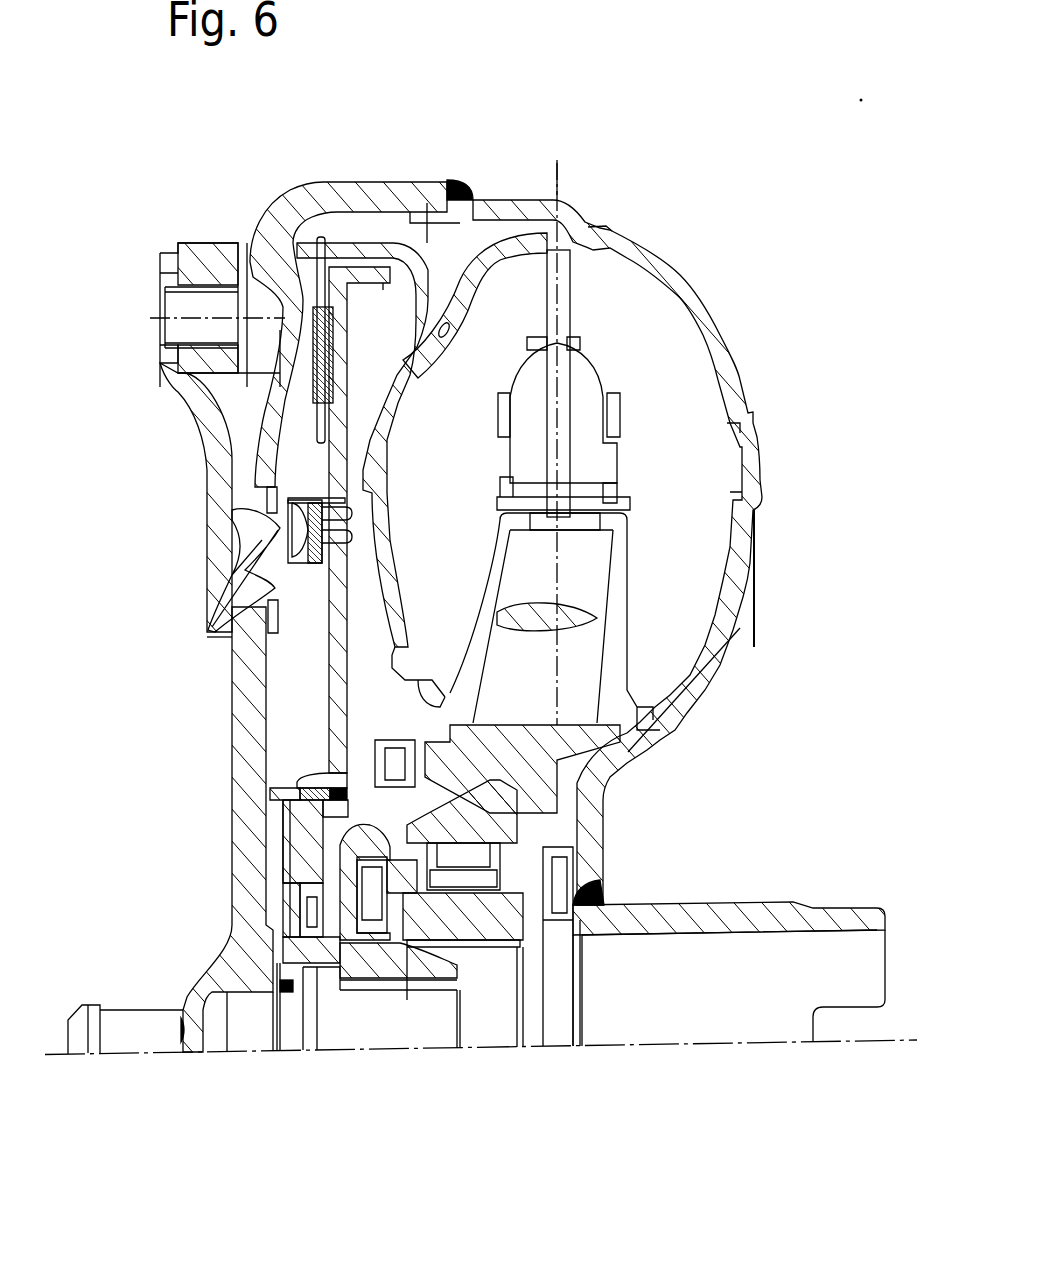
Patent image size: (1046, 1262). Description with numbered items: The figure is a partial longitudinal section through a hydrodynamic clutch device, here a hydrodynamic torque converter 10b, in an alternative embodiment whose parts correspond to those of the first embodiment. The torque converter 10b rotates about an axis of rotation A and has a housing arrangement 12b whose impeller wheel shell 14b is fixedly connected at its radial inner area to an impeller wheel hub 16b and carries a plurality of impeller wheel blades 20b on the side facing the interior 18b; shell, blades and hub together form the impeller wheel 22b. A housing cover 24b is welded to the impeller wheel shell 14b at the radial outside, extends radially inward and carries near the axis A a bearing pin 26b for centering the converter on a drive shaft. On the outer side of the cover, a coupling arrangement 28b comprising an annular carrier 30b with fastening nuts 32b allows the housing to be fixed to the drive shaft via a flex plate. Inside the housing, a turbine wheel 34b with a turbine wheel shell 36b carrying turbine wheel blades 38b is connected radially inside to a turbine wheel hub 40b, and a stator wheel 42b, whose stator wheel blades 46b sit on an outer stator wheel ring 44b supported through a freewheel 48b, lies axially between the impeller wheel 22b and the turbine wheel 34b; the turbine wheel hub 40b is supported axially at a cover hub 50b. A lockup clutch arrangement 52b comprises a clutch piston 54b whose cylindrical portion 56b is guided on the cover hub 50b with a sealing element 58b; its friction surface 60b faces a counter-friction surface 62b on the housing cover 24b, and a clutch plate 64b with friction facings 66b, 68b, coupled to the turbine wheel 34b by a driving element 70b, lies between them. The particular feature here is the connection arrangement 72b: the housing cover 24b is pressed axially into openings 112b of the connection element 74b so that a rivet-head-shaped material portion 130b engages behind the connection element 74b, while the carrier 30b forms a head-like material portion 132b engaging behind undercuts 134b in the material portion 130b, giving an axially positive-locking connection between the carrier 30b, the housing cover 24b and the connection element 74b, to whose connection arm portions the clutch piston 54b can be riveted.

The hydrodynamic torque converter 10b is at (648, 195).
The housing arrangement 12b is at (503, 190).
The impeller wheel shell 14b is at (723, 330).
The impeller wheel hub 16b is at (751, 902).
The interior 18b is at (567, 298).
The impeller wheel blades 20b is at (694, 422).
The impeller wheel 22b is at (790, 497).
The housing cover 24b is at (230, 700).
The bearing pin 26b is at (127, 1008).
The coupling arrangement 28b is at (160, 403).
The carrier 30b is at (207, 430).
The fastening nuts 32b is at (222, 250).
The turbine wheel 34b is at (478, 633).
The turbine wheel shell 36b is at (557, 200).
The turbine wheel blades 38b is at (476, 425).
The turbine wheel hub 40b is at (410, 975).
The stator wheel 42b is at (613, 667).
The outer stator wheel ring 44b is at (560, 755).
The stator wheel blades 46b is at (543, 626).
The freewheel 48b is at (560, 826).
The cover hub 50b is at (284, 998).
The lockup clutch arrangement 52b is at (307, 237).
The clutch piston 54b is at (328, 640).
The cylindrical portion 56b is at (300, 778).
The sealing element 58b is at (284, 805).
The friction surface 60b is at (330, 330).
The counter-friction surface 62b is at (400, 372).
The clutch plate 64b is at (330, 230).
The friction facing 66b is at (355, 375).
The friction facing 68b is at (543, 233).
The driving element 70b is at (340, 347).
The connection arrangement 72b is at (200, 568).
The connection element 74b is at (250, 605).
The openings 112b is at (300, 543).
The material portion 130b is at (300, 503).
The head-like material portion 132b is at (260, 543).
The undercuts 134b is at (262, 497).
The axis of rotation A is at (673, 1044).